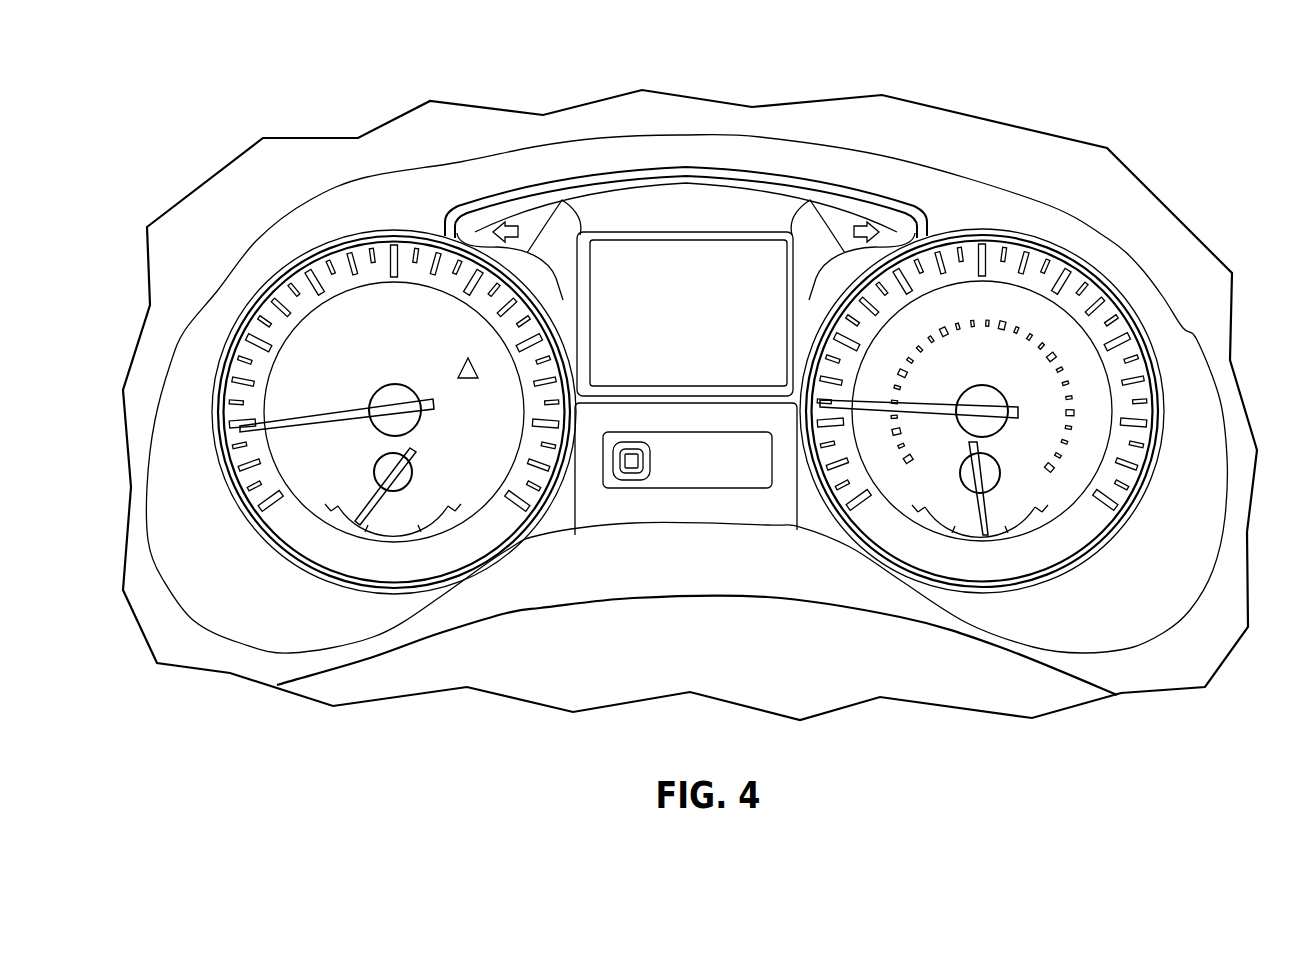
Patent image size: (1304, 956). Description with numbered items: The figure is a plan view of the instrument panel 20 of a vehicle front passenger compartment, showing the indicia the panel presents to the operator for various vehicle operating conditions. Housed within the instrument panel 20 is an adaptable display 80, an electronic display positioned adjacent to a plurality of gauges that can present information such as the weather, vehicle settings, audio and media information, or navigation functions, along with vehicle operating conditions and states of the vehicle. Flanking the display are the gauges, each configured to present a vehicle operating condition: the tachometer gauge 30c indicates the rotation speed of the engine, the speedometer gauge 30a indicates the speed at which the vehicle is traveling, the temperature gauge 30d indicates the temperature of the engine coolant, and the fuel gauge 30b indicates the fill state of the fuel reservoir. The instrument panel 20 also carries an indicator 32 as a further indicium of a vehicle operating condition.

The instrument panel 20 is at (489, 142).
The adaptable display 80 is at (683, 253).
The tachometer gauge 30c is at (384, 386).
The speedometer gauge 30a is at (980, 384).
The temperature gauge 30d is at (423, 478).
The fuel gauge 30b is at (1000, 497).
The indicator 32 is at (468, 378).